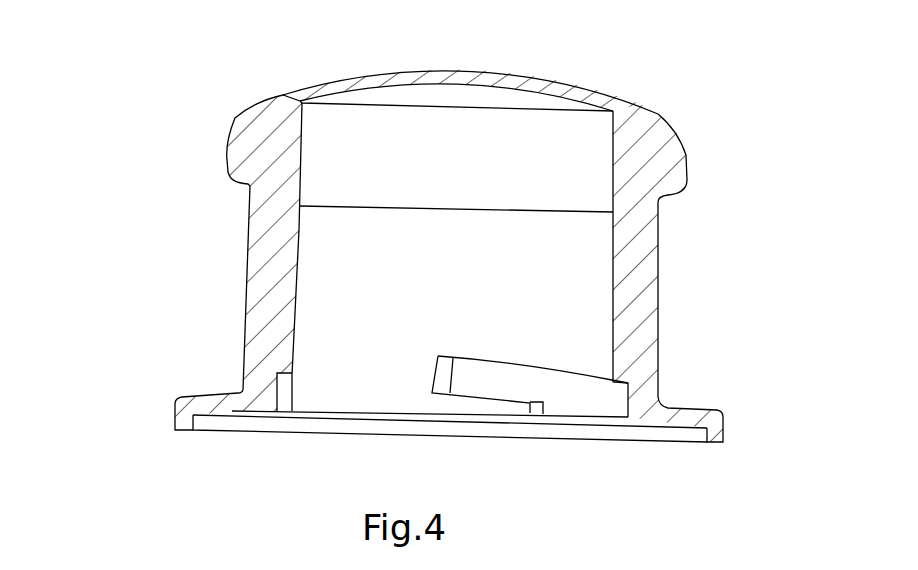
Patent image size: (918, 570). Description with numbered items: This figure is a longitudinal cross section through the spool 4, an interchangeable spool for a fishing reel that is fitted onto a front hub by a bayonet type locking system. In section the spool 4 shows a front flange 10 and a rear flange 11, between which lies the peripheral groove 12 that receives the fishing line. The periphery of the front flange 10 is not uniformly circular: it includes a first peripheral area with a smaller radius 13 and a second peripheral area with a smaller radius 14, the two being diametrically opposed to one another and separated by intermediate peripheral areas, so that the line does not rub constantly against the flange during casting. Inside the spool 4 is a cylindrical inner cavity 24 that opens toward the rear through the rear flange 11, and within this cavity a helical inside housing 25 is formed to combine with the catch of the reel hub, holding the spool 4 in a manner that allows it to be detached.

The spool 4 is at (142, 413).
The front flange 10 is at (283, 96).
The rear flange 11 is at (185, 427).
The peripheral groove 12 is at (222, 293).
The first peripheral area with a smaller radius 13 is at (688, 160).
The second peripheral area with a smaller radius 14 is at (213, 163).
The cylindrical inner cavity 24 is at (562, 298).
The helical inside housing 25 is at (492, 383).